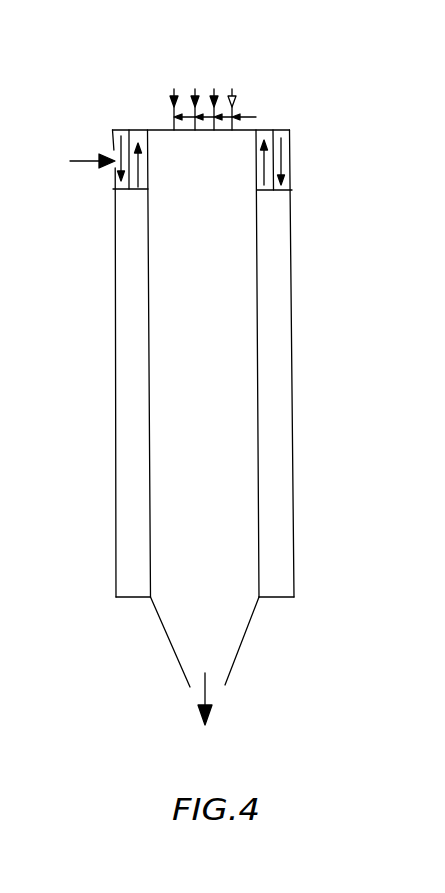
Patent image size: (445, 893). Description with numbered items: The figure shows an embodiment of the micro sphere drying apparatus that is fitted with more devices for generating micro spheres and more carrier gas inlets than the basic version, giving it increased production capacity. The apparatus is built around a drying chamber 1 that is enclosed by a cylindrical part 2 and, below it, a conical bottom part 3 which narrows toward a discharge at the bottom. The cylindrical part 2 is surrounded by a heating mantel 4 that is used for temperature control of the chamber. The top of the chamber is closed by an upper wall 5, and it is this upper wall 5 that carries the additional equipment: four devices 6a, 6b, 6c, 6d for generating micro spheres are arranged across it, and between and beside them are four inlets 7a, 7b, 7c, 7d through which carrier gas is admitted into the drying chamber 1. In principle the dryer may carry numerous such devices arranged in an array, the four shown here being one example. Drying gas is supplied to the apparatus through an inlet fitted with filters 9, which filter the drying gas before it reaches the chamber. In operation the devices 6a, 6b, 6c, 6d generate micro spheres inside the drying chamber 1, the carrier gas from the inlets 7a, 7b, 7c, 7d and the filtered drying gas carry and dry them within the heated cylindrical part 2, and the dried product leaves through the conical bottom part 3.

The drying chamber 1 is at (170, 362).
The cylindrical part 2 is at (107, 170).
The conical bottom part 3 is at (167, 637).
The heating mantel 4 is at (275, 352).
The upper wall 5 is at (126, 130).
The filters 9 is at (258, 134).
The device for generating micro spheres 6a is at (173, 88).
The device for generating micro spheres 6b is at (195, 89).
The device for generating micro spheres 6c is at (216, 88).
The device for generating micro spheres 6d is at (234, 90).
The inlet for carrier gas 7a is at (181, 108).
The inlet for carrier gas 7b is at (203, 108).
The inlet for carrier gas 7c is at (224, 106).
The inlet for carrier gas 7d is at (260, 112).